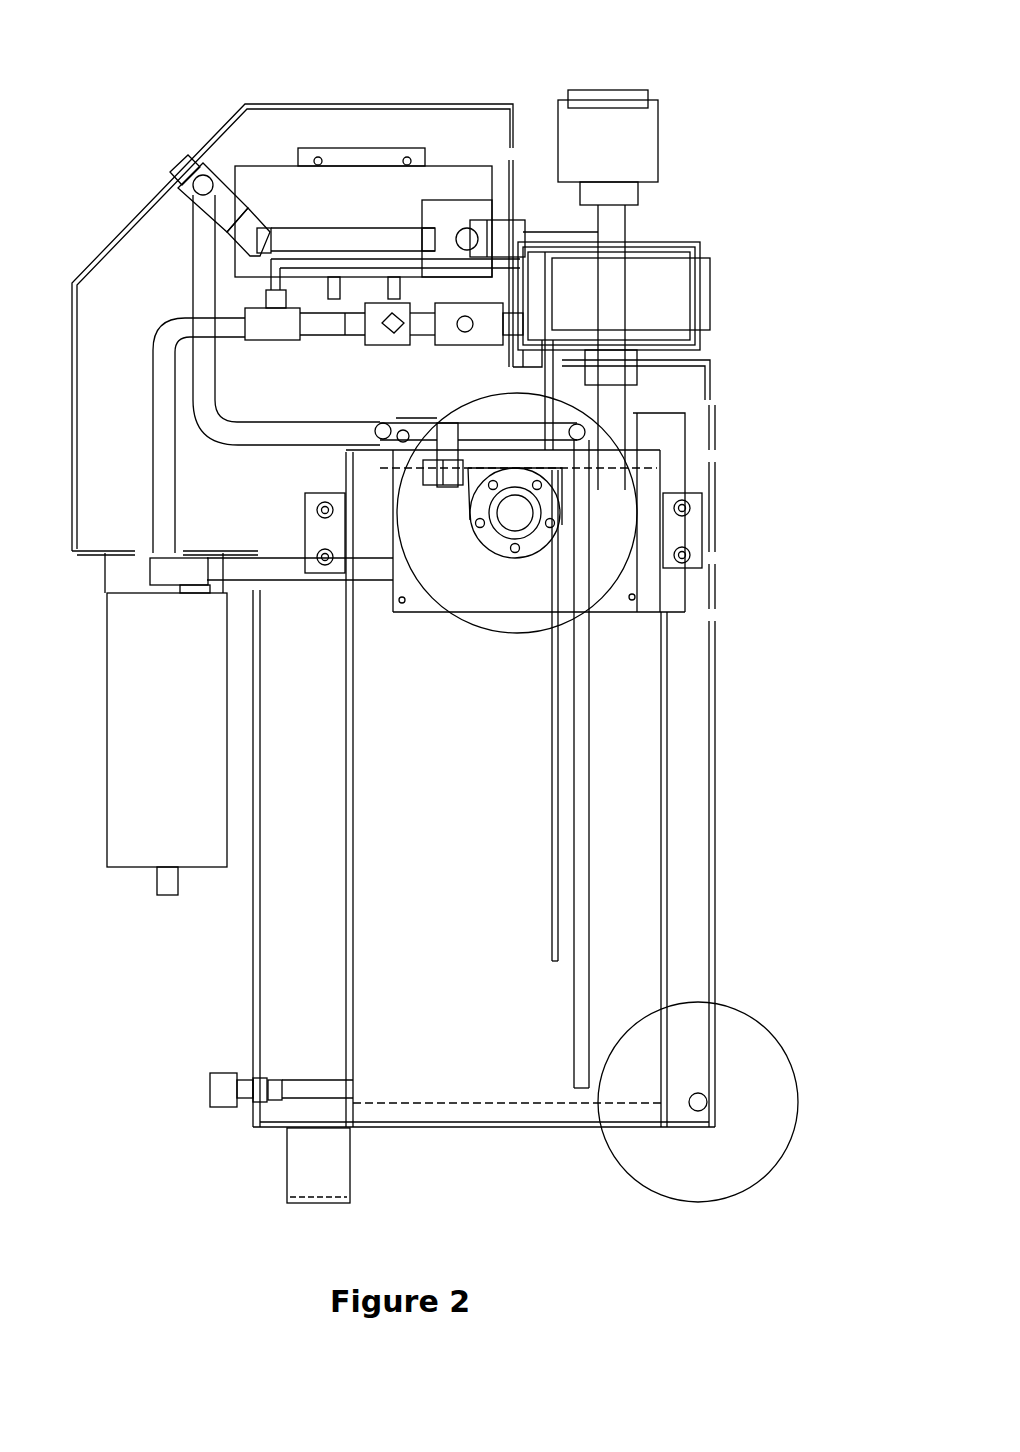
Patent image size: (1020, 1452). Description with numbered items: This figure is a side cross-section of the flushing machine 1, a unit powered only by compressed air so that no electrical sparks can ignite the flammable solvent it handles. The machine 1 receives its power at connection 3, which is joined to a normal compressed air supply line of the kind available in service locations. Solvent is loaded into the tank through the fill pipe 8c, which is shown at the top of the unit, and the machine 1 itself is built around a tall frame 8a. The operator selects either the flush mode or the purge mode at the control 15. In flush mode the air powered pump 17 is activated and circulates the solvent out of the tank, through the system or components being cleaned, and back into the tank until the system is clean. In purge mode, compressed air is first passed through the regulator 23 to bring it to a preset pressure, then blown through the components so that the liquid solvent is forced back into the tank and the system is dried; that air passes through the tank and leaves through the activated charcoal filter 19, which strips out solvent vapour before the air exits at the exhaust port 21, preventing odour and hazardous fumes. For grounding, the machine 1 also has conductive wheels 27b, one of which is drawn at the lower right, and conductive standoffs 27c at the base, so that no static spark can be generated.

The machine 1 is at (748, 42).
The connection 3 is at (585, 235).
The frame 8a is at (630, 826).
The fill pipe 8c is at (650, 140).
The control 15 is at (185, 162).
The air powered pump 17 is at (273, 195).
The activated charcoal filter 19 is at (680, 292).
The exhaust port 21 is at (632, 400).
The regulator 23 is at (440, 206).
The conductive wheels 27b is at (715, 1182).
The conductive standoffs 27c is at (340, 1178).